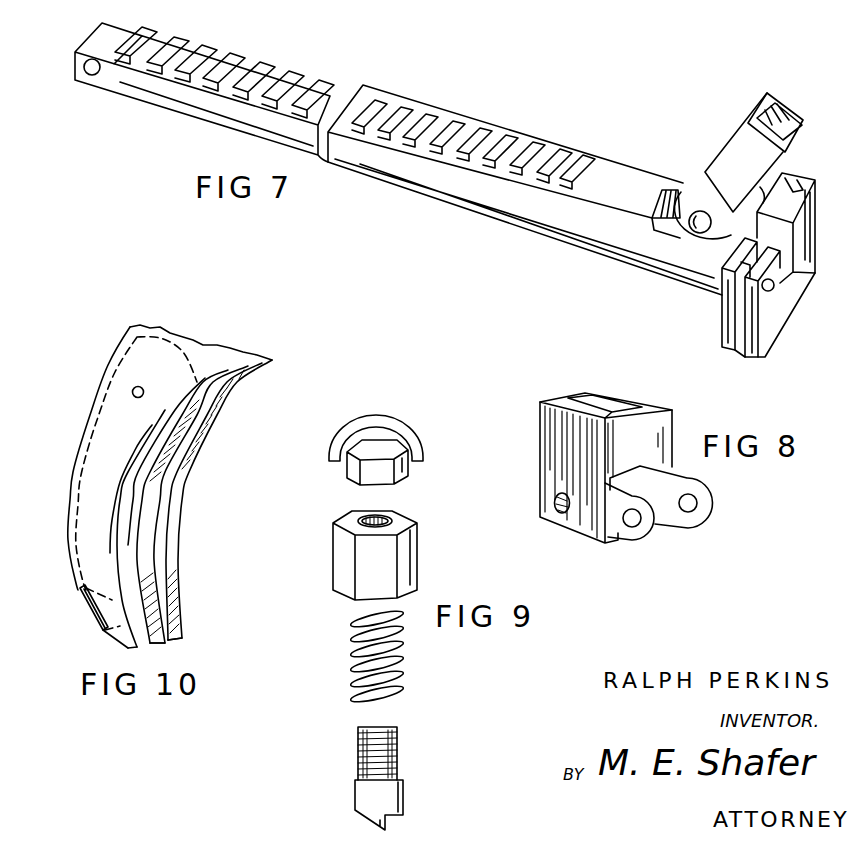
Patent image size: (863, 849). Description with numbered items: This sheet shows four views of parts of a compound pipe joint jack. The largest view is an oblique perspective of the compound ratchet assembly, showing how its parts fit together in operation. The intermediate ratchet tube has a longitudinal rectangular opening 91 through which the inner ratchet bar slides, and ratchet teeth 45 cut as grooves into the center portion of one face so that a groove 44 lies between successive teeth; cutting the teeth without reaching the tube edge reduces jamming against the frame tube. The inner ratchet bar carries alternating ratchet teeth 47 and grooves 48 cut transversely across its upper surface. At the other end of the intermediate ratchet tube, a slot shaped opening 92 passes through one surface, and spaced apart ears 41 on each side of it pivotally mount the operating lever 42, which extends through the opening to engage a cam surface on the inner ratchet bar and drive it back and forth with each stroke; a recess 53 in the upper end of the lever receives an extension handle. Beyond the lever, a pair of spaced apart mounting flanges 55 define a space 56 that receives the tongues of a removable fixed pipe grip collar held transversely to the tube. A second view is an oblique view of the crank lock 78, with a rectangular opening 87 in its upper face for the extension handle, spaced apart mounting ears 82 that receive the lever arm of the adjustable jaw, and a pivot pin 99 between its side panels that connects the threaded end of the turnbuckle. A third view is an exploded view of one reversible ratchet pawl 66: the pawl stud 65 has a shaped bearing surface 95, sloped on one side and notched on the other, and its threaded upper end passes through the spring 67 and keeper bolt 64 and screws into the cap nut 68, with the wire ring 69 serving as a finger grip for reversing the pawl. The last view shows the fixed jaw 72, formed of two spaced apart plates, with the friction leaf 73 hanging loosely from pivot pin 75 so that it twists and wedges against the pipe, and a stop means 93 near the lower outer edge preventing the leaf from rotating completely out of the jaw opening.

In FIG. 7, the spaced apart ears 41 is at (700, 197).
In FIG. 7, the operating lever 42 is at (733, 119).
In FIG. 7, the groove 44 is at (400, 113).
In FIG. 7, the ratchet teeth 45 is at (530, 140).
In FIG. 7, the ratchet teeth 47 is at (168, 34).
In FIG. 7, the grooves 48 is at (292, 72).
In FIG. 7, the recess 53 is at (802, 126).
In FIG. 7, the mounting flanges 55 is at (787, 170).
In FIG. 7, the space 56 is at (740, 353).
In FIG. 7, the longitudinal rectangular opening 91 is at (787, 280).
In FIG. 7, the slot shaped opening 92 is at (663, 189).
In FIG. 9, the keeper bolt 64 is at (428, 559).
In FIG. 9, the pawl stud 65 is at (405, 763).
In FIG. 9, the ratchet pawl 66 is at (378, 778).
In FIG. 9, the spring 67 is at (405, 674).
In FIG. 9, the cap nut 68 is at (407, 486).
In FIG. 9, the wire ring 69 is at (405, 414).
In FIG. 9, the shaped bearing surface 95 is at (405, 819).
In FIG. 10, the fixed jaw 72 is at (66, 474).
In FIG. 10, the friction leaf 73 is at (165, 650).
In FIG. 10, the pivot pin 75 is at (136, 386).
In FIG. 10, the stop means 93 is at (82, 614).
In FIG. 8, the crank lock 78 is at (573, 540).
In FIG. 8, the mounting ears 82 is at (711, 517).
In FIG. 8, the rectangular opening 87 is at (600, 397).
In FIG. 8, the pivot pin 99 is at (555, 500).